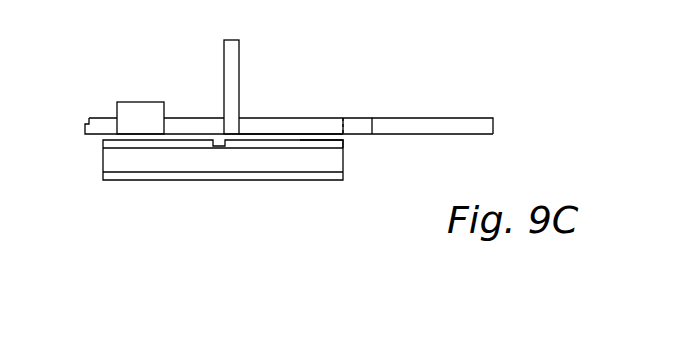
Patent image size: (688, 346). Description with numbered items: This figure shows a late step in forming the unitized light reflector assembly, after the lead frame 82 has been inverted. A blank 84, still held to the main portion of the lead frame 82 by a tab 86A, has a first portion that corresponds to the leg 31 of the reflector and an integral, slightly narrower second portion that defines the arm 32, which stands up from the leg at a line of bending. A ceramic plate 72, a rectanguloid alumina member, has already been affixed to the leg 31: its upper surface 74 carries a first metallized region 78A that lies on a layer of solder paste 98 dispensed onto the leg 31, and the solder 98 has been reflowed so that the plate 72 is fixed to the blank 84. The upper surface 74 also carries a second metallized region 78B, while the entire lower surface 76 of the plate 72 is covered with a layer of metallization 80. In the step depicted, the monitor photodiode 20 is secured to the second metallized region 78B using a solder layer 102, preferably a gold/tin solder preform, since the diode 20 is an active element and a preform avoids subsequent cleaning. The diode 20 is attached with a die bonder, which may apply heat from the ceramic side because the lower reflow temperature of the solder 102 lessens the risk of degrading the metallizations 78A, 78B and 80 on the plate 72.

The monitor photodiode 20 is at (140, 115).
The leg of the reflector 31 is at (253, 125).
The arm of the reflector 32 is at (236, 58).
The ceramic plate 72 is at (307, 158).
The upper surface 74 is at (136, 137).
The lower surface 76 is at (146, 167).
The first metallized region 78A is at (340, 146).
The second metallized region 78B is at (211, 148).
The layer of metallization 80 is at (247, 173).
The lead frame 82 is at (103, 119).
The blank 84 is at (289, 119).
The tab 86A is at (358, 125).
The layer of solder paste 98 is at (343, 139).
The solder layer 102 is at (128, 137).